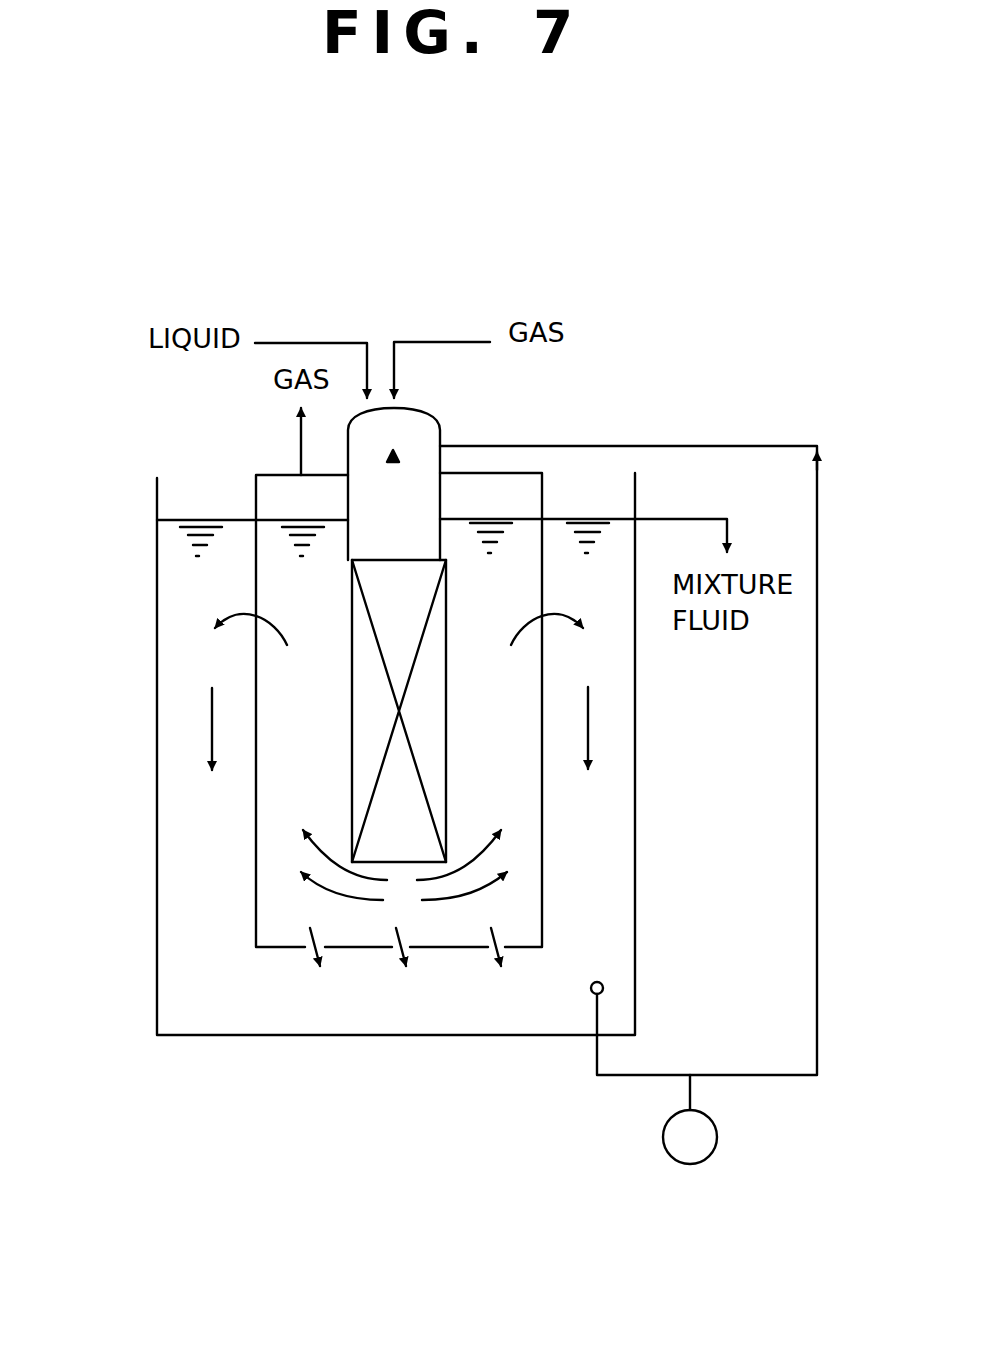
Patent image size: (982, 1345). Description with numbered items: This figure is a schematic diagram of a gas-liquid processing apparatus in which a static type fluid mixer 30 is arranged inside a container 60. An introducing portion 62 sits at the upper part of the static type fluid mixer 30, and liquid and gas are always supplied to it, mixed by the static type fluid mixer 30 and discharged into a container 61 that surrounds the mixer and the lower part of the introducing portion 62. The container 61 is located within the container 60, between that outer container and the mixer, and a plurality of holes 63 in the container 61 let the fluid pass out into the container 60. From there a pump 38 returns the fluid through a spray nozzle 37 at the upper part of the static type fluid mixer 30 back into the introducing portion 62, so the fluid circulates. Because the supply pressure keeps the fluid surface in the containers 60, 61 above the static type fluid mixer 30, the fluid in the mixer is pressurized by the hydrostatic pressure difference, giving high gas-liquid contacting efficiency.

The static type fluid mixer 30 is at (447, 735).
The spray nozzle 37 is at (399, 457).
The pump 38 is at (715, 1145).
The container 60 is at (158, 803).
The container 61 is at (543, 839).
The introducing portion 62 is at (438, 420).
The holes 63 is at (255, 603).